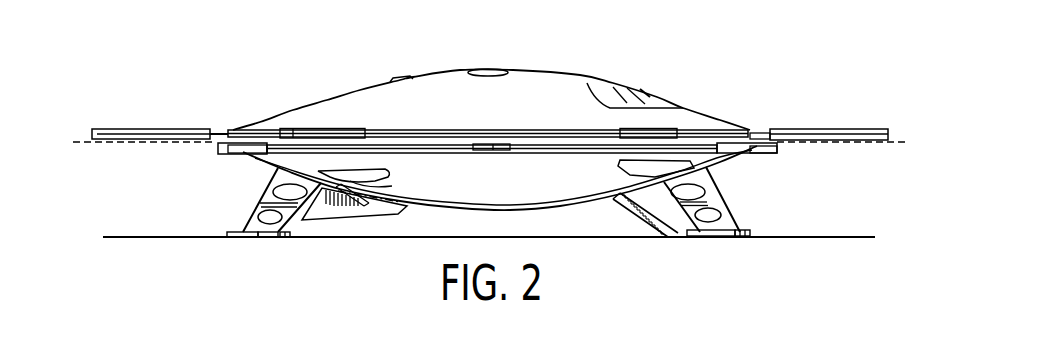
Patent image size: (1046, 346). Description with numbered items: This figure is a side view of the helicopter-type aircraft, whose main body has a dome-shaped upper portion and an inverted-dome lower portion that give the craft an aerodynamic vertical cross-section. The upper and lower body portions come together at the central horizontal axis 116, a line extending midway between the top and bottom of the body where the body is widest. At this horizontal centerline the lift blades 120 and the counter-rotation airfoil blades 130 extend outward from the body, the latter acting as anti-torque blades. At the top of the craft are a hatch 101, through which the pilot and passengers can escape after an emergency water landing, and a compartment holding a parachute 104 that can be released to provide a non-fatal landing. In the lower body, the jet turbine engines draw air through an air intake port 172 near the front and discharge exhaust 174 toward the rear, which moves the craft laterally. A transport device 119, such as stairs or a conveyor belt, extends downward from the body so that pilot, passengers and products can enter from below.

The hatch 101 is at (402, 77).
The parachute 104 is at (503, 70).
The central horizontal axis 116 is at (127, 143).
The lift blades 120 is at (805, 128).
The counter-rotation airfoil blades 130 is at (774, 153).
The air intake port 172 is at (617, 165).
The exhaust 174 is at (389, 176).
The transport device 119 is at (643, 213).